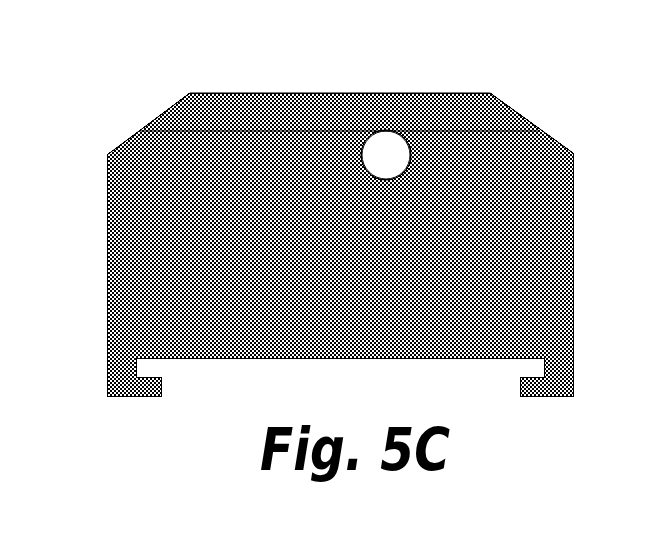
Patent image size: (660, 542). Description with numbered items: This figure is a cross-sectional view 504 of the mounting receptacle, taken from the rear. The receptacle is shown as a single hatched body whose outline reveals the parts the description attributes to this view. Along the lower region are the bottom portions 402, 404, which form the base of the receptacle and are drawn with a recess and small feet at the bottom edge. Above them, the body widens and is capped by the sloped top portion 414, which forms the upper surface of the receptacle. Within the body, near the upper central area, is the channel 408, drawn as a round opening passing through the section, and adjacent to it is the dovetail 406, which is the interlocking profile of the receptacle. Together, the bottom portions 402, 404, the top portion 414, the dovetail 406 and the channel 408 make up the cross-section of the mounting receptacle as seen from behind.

The cross-sectional view 504 is at (319, 201).
The bottom portion 402 is at (529, 149).
The bottom portion 404 is at (251, 124).
The dovetail 406 is at (366, 134).
The channel 408 is at (401, 145).
The top portion 414 is at (247, 93).